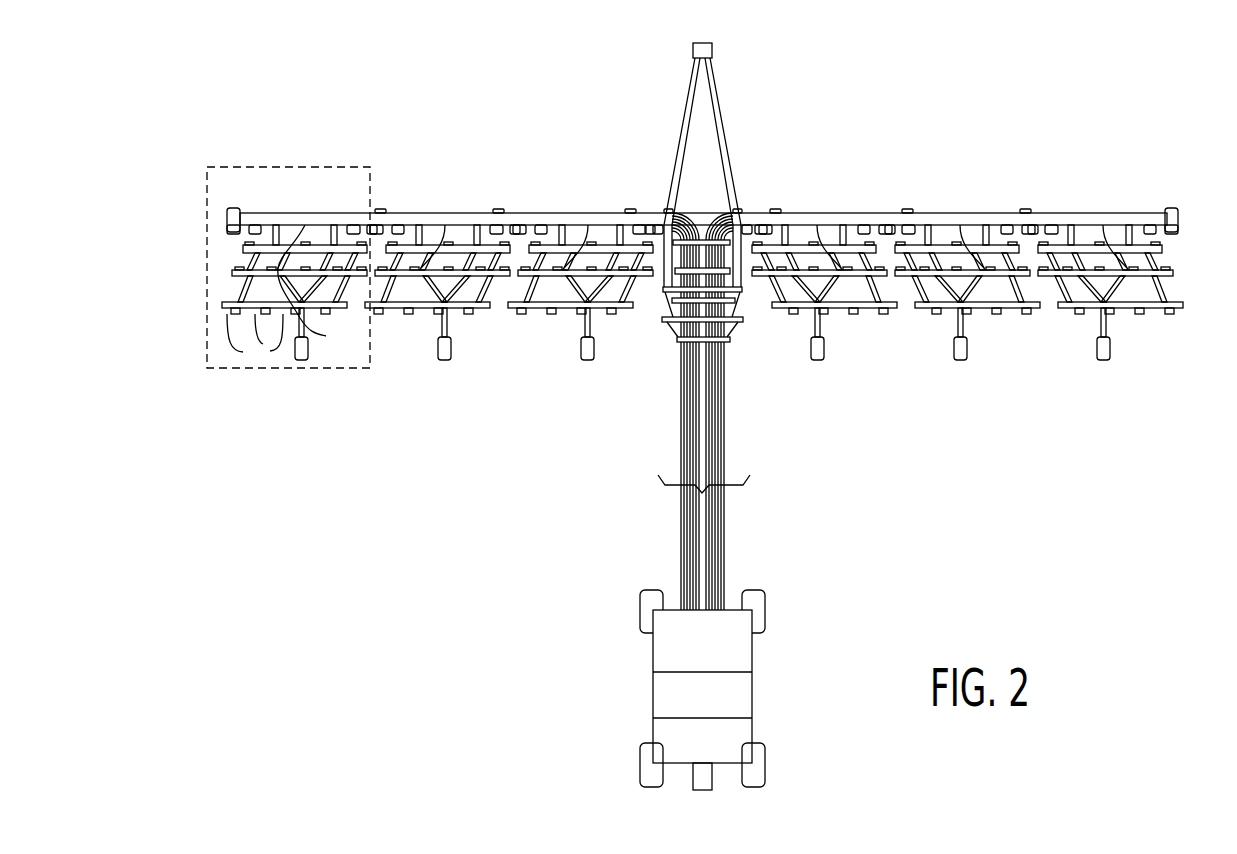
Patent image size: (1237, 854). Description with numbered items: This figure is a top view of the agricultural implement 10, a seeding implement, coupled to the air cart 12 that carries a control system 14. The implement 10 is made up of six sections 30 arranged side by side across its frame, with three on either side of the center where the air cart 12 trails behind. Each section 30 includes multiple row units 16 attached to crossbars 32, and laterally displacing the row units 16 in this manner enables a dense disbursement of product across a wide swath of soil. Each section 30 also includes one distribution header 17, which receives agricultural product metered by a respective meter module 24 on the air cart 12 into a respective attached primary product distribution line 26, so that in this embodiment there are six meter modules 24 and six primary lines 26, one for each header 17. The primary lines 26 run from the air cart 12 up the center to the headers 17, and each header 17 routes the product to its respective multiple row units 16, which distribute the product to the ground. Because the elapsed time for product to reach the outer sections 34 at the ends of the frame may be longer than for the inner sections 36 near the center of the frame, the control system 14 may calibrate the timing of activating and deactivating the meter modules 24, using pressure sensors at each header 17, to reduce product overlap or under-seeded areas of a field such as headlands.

The agricultural implement 10 is at (601, 422).
The air cart 12 is at (744, 667).
The control system 14 is at (734, 586).
The row units 16 is at (290, 369).
The distribution header 17 is at (314, 289).
The meter module 24 is at (671, 586).
The primary product distribution line 26 is at (670, 500).
The section 30 is at (266, 290).
The crossbars 32 is at (238, 303).
The outer sections 34 is at (329, 126).
The inner sections 36 is at (578, 183).